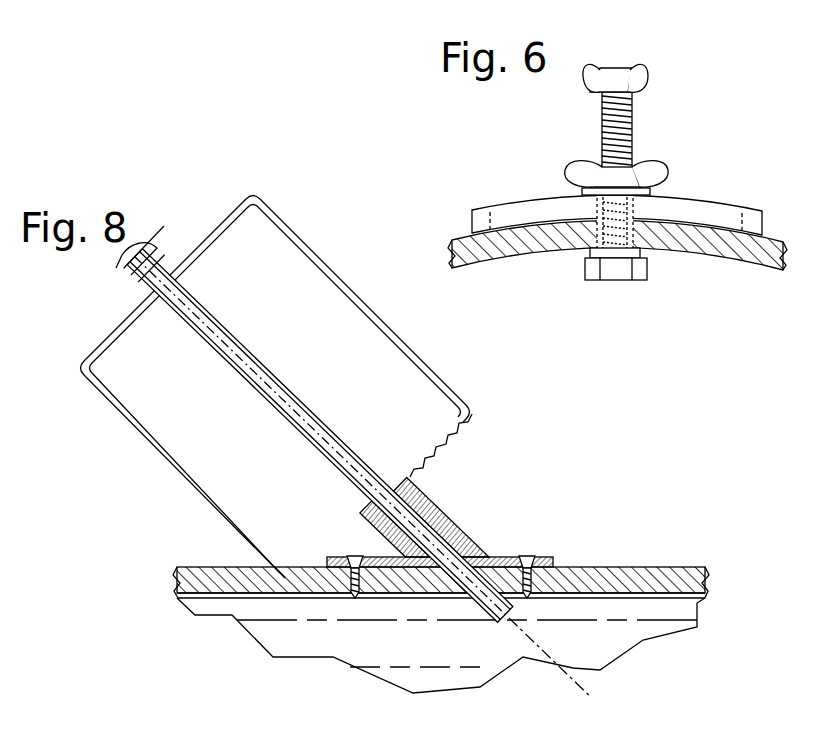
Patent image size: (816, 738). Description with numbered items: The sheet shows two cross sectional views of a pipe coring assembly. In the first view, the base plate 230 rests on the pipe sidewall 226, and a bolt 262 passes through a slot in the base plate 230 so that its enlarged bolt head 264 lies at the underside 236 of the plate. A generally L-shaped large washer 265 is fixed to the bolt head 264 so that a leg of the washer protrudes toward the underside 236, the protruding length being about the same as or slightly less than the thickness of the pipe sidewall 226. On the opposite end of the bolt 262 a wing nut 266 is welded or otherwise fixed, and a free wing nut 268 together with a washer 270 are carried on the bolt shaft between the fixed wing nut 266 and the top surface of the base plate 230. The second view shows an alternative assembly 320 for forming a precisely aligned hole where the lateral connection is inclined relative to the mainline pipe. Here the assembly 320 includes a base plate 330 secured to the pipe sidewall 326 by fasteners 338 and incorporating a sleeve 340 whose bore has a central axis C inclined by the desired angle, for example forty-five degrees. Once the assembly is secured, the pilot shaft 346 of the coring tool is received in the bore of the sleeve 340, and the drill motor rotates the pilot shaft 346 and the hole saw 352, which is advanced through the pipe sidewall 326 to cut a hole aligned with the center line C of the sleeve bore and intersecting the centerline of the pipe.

In FIG. 6, the pipe sidewall 226 is at (462, 239).
In FIG. 6, the base plate 230 is at (727, 206).
In FIG. 6, the underside 236 is at (552, 232).
In FIG. 6, the bolt 262 is at (602, 136).
In FIG. 6, the bolt head 264 is at (592, 282).
In FIG. 6, the large washer 265 is at (643, 252).
In FIG. 6, the wing nut 266 is at (648, 76).
In FIG. 6, the free wing nut 268 is at (668, 178).
In FIG. 6, the washer 270 is at (582, 191).
In FIG. 8, the assembly 320 is at (482, 510).
In FIG. 8, the pipe sidewall 326 is at (690, 567).
In FIG. 8, the base plate 330 is at (545, 557).
In FIG. 8, the fasteners 338 is at (353, 556).
In FIG. 8, the sleeve 340 is at (425, 485).
In FIG. 8, the pilot shaft 346 is at (240, 340).
In FIG. 8, the hole saw 352 is at (157, 455).
In FIG. 8, the central axis C is at (552, 652).